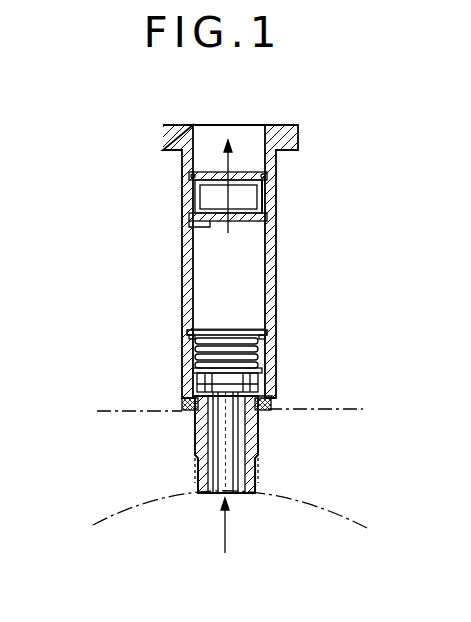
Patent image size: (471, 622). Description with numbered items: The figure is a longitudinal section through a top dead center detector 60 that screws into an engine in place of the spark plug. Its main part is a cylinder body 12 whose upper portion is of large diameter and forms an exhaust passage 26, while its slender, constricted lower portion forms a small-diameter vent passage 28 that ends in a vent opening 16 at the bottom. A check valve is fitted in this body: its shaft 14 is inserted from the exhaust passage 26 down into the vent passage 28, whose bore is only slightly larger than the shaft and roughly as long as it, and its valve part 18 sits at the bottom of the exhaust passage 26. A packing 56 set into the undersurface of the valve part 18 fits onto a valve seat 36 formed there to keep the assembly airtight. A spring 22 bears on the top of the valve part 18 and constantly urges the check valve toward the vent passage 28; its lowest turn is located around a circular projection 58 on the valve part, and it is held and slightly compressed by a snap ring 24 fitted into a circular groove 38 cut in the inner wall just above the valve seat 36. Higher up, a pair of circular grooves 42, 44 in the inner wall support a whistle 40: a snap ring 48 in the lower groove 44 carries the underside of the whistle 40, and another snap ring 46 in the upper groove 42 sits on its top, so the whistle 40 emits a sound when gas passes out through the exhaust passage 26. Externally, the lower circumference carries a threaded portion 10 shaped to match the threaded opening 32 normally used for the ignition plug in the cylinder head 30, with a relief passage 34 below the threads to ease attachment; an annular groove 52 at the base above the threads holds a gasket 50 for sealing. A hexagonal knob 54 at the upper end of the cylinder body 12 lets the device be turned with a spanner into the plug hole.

The threaded portion 10 is at (257, 420).
The cylinder body 12 is at (276, 307).
The shaft 14 is at (252, 478).
The vent opening 16 is at (215, 487).
The valve part 18 is at (190, 372).
The spring 22 is at (213, 332).
The snap ring 24 is at (228, 328).
The exhaust passage 26 is at (250, 235).
The vent passage 28 is at (193, 493).
The cylinder head 30 is at (170, 458).
The threaded opening 32 is at (258, 442).
The relief passage 34 is at (253, 493).
The valve seat 36 is at (182, 412).
The circular groove 38 is at (268, 330).
The whistle 40 is at (210, 195).
The upper circular groove 42 is at (190, 174).
The lower circular groove 44 is at (262, 220).
The snap ring 46 is at (217, 172).
The snap ring 48 is at (205, 222).
The gasket 50 is at (184, 402).
The groove 52 is at (268, 396).
The knob 54 is at (292, 135).
The packing 56 is at (190, 385).
The circular projection 58 is at (190, 350).
The valve assembly 60 is at (285, 122).